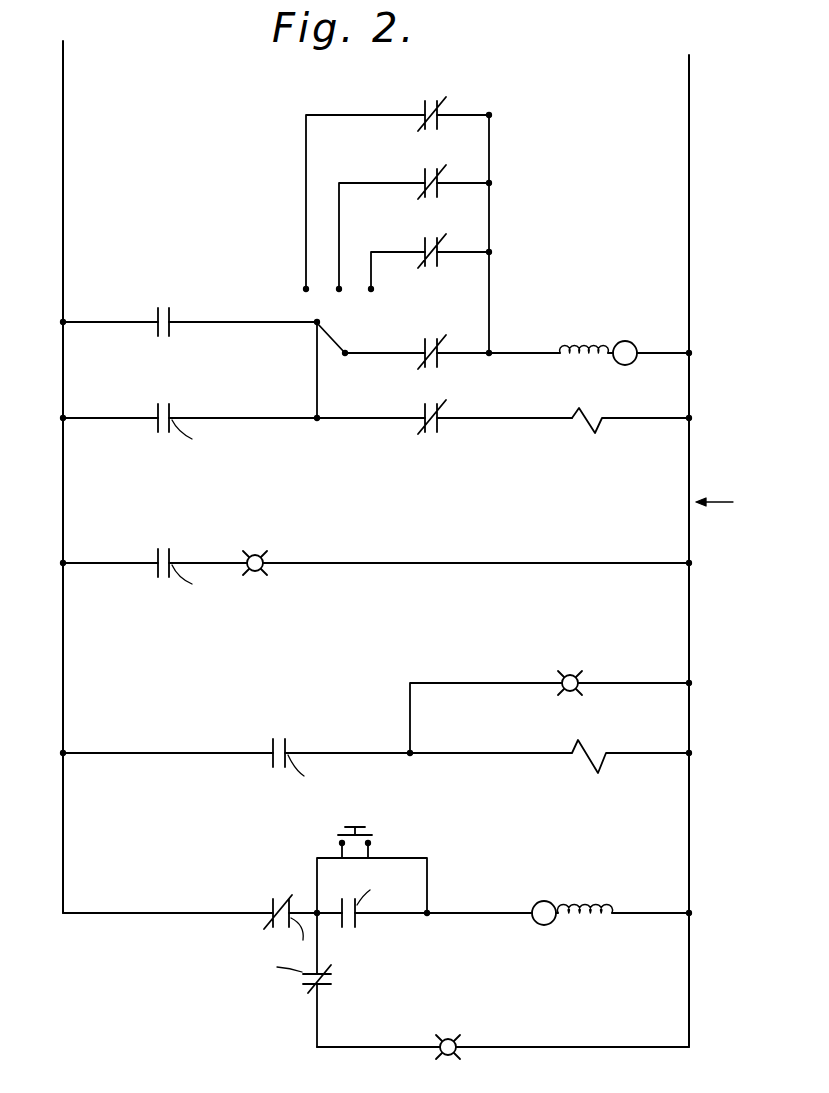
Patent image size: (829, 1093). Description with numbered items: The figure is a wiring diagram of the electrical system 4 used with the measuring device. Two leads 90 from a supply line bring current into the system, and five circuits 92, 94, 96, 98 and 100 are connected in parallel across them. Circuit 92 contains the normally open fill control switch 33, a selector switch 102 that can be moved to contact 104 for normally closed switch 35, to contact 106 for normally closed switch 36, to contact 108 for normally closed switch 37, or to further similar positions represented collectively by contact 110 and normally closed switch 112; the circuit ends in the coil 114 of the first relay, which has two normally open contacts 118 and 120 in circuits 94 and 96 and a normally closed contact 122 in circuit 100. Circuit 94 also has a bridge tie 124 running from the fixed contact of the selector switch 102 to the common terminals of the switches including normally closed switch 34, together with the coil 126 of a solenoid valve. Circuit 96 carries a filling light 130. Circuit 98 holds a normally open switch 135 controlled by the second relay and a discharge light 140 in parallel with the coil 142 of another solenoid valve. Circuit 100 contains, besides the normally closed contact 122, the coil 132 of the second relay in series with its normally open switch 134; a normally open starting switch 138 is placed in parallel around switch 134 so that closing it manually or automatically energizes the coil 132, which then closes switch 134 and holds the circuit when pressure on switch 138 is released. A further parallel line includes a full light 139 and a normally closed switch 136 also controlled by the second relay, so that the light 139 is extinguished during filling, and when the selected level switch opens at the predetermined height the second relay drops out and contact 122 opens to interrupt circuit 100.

The electrical system 4 is at (724, 506).
The leads 90 is at (64, 62).
The circuit 92 is at (120, 320).
The circuit 94 is at (131, 416).
The circuit 96 is at (122, 562).
The circuit 98 is at (167, 752).
The circuit 100 is at (130, 912).
The selector switch 102 is at (331, 337).
The contact 104 is at (345, 353).
The contact 106 is at (371, 289).
The contact 108 is at (339, 289).
The contact 110 is at (305, 289).
The normally closed switch 112 is at (441, 120).
The coil of relay R-1 114 is at (592, 345).
The normally open contact 118 is at (172, 418).
The normally open contact 120 is at (172, 563).
The normally closed contact 122 is at (270, 908).
The bridge tie 124 is at (317, 377).
The coil of solenoid valve 126 is at (583, 406).
The filling light 130 is at (263, 555).
The coil of relay R-2 132 is at (592, 912).
The normally open switch 134 is at (357, 922).
The normally open switch 135 is at (288, 752).
The normally closed switch 136 is at (320, 988).
The normally open switch 138 is at (373, 835).
The full light 139 is at (455, 1038).
The discharge light 140 is at (565, 676).
The coil of solenoid valve 142 is at (590, 750).
The fill control switch 33 is at (172, 321).
The normally closed switch 34 is at (441, 422).
The normally closed switch 35 is at (441, 357).
The normally closed switch 36 is at (441, 258).
The normally closed switch 37 is at (441, 189).